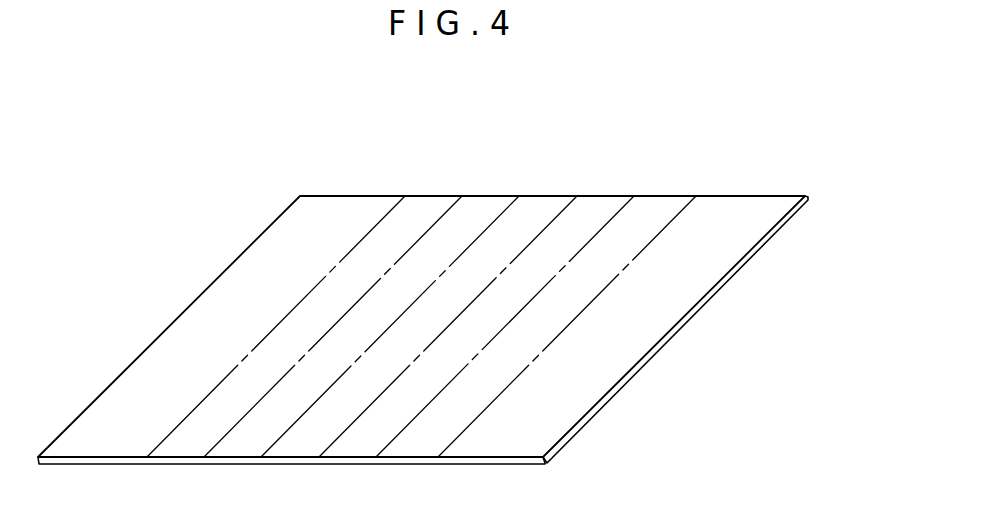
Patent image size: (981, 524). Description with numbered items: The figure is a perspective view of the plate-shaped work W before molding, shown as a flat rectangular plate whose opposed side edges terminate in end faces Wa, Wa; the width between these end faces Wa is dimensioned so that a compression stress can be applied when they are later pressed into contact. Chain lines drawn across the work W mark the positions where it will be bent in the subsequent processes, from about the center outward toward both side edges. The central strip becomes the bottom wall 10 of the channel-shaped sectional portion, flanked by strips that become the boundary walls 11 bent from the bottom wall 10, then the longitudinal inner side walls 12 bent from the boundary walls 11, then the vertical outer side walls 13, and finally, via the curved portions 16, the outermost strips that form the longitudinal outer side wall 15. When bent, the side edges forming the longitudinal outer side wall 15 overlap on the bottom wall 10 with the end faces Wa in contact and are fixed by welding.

The plate-shaped work W is at (734, 190).
The end face Wa is at (37, 455).
The bottom wall 10 is at (532, 213).
The boundary wall 11 is at (480, 210).
The longitudinal inner side wall 12 is at (427, 210).
The vertical outer side wall 13 is at (372, 215).
The longitudinal outer side wall 15 is at (267, 247).
The curved portion 16 is at (315, 233).